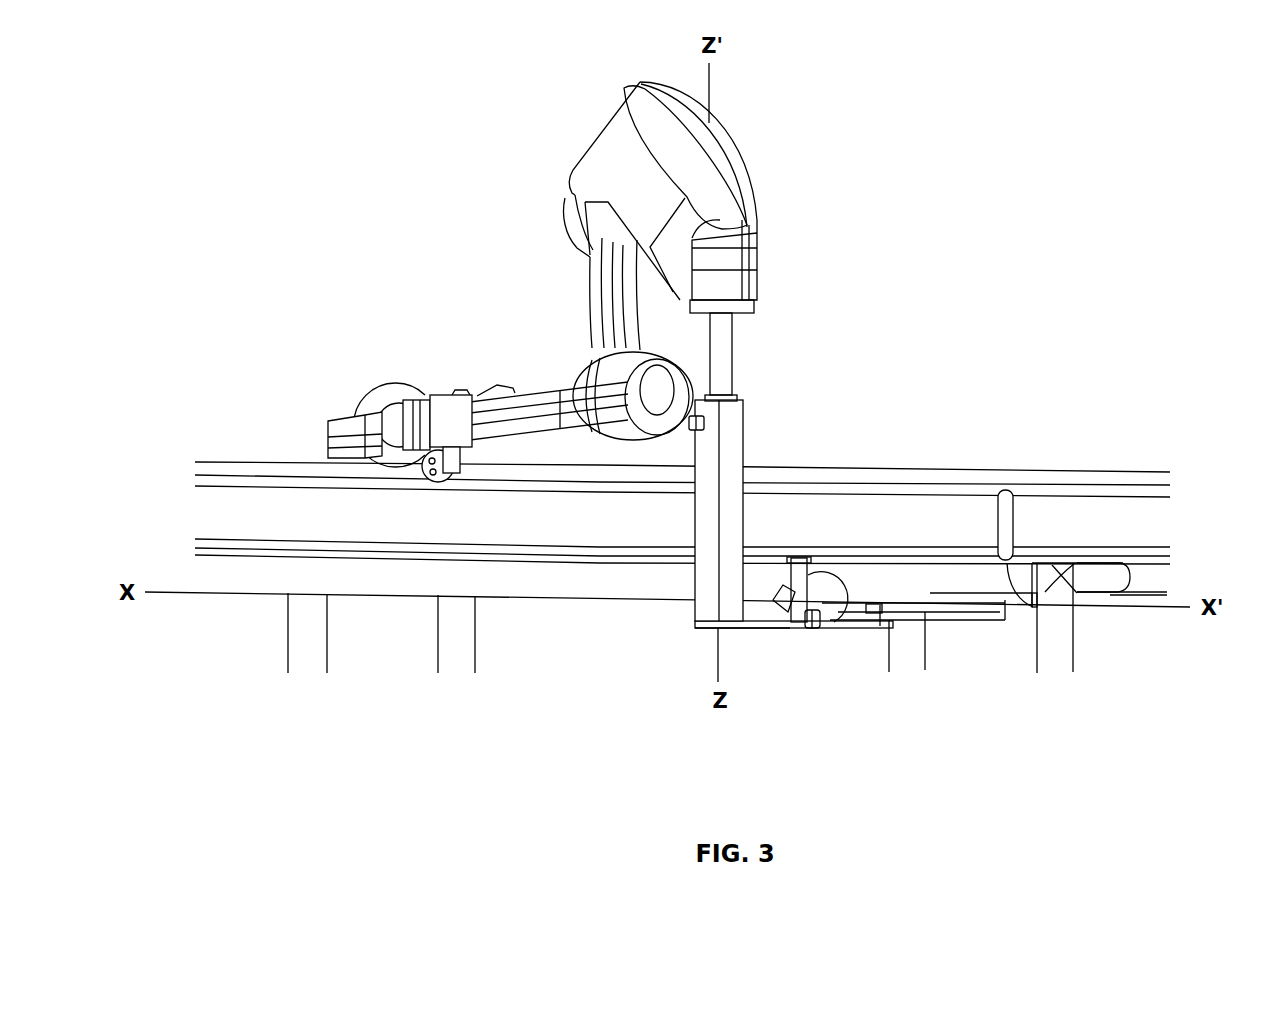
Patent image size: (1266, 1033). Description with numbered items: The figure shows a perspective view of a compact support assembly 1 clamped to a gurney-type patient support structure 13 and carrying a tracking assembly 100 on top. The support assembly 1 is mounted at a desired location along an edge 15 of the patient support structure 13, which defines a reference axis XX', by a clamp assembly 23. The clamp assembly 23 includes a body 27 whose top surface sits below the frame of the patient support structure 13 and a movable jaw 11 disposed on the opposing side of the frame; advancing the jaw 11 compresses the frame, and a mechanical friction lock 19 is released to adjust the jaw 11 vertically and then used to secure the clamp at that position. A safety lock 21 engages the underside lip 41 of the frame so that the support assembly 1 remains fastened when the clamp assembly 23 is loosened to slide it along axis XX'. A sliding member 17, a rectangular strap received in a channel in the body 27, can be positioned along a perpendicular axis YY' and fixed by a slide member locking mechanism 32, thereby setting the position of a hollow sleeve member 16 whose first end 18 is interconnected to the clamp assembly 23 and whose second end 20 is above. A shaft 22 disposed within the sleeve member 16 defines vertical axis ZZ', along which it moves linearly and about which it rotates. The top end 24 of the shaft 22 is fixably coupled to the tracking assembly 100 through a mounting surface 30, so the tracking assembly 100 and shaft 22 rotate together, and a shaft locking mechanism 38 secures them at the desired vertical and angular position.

The tracking assembly 100 is at (557, 145).
The mounting surface 30 is at (690, 305).
The top end 24 is at (733, 314).
The shaft 22 is at (733, 355).
The second end 20 is at (740, 401).
The sleeve member 16 is at (745, 452).
The clamp assembly 23 is at (822, 572).
The patient support structure 13 is at (1153, 522).
The first end 18 is at (695, 623).
The shaft locking mechanism 38 is at (692, 428).
The sliding member 17 is at (765, 628).
The mechanical friction lock 19 is at (788, 623).
The slide member locking mechanism 32 is at (818, 628).
The movable jaw 11 is at (848, 618).
The body 27 is at (868, 620).
The safety lock 21 is at (888, 620).
The edge 15 is at (996, 590).
The underside lip 41 is at (1038, 600).
The support assembly 1 is at (753, 748).